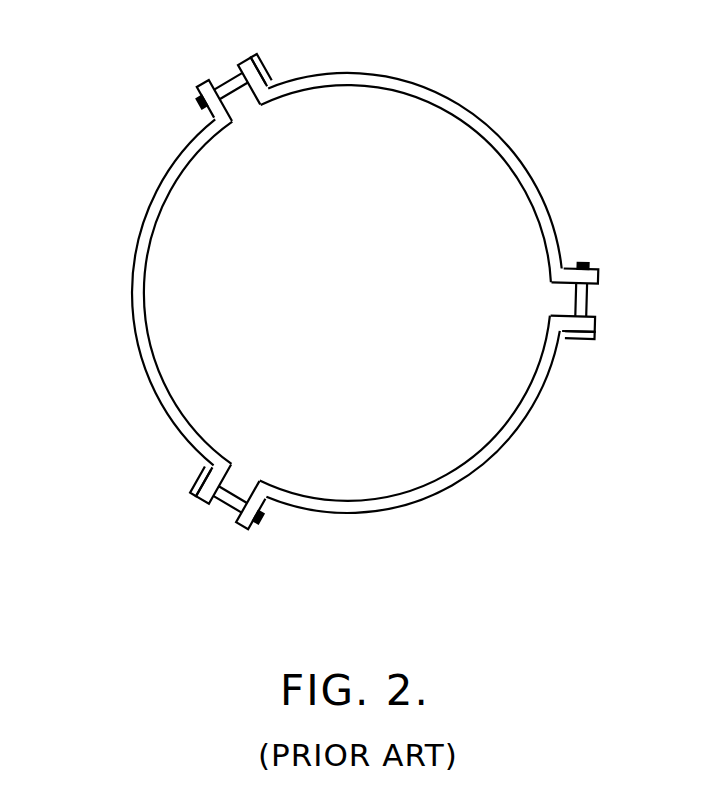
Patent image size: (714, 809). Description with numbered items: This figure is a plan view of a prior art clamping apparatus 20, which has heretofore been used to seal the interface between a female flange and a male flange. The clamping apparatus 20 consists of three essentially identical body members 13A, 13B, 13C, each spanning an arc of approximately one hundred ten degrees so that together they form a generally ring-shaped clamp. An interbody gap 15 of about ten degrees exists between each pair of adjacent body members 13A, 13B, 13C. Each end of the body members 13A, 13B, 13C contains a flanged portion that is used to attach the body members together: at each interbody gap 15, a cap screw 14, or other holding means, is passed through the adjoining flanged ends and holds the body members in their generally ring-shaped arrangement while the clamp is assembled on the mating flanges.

The body member 13A is at (448, 95).
The body member 13B is at (166, 166).
The body member 13C is at (396, 513).
The cap screw 14 is at (233, 84).
The interbody gap 15 is at (560, 300).
The clamping apparatus 20 is at (115, 368).